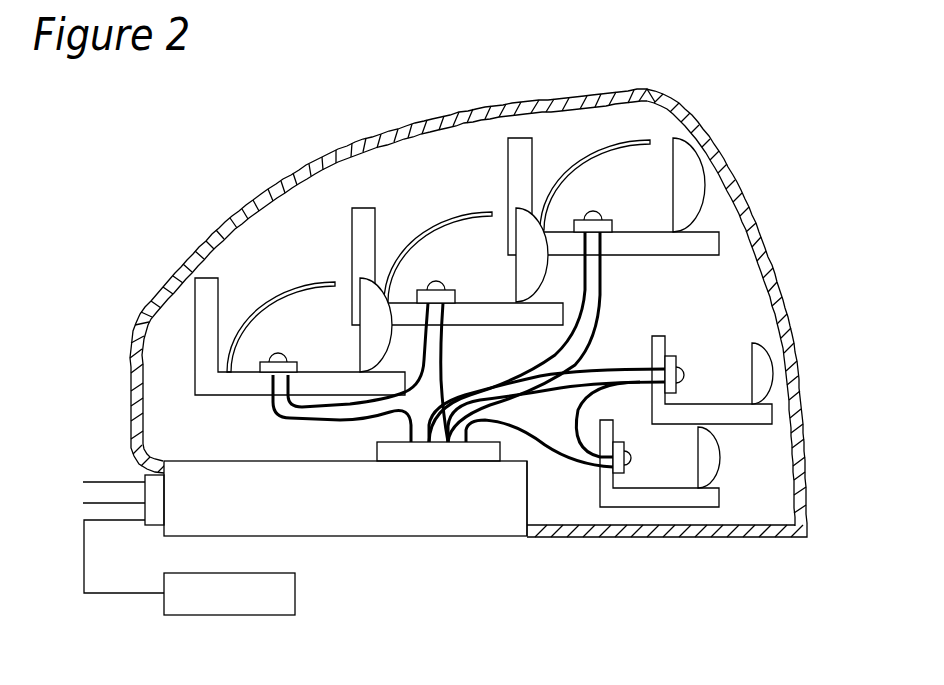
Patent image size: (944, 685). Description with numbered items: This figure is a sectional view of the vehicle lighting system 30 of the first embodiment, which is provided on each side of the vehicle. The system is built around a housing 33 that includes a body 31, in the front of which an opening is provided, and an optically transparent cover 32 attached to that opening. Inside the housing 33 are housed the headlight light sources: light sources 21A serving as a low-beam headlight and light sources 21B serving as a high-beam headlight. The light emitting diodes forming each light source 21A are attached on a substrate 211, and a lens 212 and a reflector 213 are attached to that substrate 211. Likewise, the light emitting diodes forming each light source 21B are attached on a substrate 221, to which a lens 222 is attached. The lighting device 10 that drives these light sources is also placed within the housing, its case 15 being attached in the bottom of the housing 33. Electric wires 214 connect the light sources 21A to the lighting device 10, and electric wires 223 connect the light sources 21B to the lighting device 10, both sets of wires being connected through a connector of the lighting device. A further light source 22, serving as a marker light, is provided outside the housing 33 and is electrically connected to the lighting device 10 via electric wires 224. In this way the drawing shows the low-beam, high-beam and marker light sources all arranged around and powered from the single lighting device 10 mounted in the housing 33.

The lighting device 10 is at (388, 537).
The case 15 is at (483, 517).
The light source 22 is at (296, 611).
The vehicle lighting system 30 is at (431, 282).
The body 31 is at (524, 100).
The optically transparent cover 32 is at (736, 172).
The housing 33 is at (565, 96).
The light source 21A is at (281, 359).
The light source 21B is at (681, 366).
The substrate 211 is at (333, 383).
The lens 212 is at (366, 293).
The reflector 213 is at (265, 300).
The electric wires 214 is at (279, 418).
The substrate 221 is at (763, 413).
The lens 222 is at (762, 363).
The electric wires 223 is at (553, 395).
The electric wires 224 is at (121, 594).